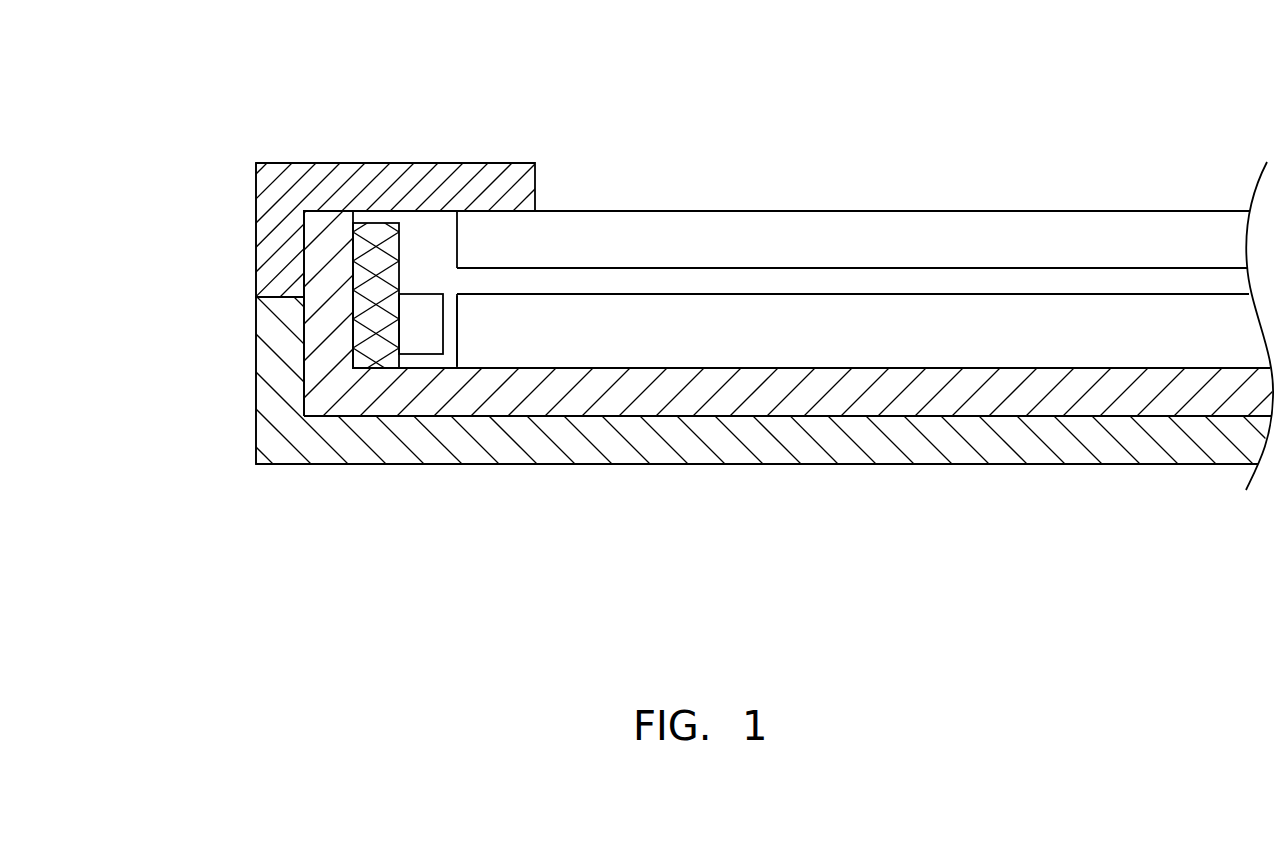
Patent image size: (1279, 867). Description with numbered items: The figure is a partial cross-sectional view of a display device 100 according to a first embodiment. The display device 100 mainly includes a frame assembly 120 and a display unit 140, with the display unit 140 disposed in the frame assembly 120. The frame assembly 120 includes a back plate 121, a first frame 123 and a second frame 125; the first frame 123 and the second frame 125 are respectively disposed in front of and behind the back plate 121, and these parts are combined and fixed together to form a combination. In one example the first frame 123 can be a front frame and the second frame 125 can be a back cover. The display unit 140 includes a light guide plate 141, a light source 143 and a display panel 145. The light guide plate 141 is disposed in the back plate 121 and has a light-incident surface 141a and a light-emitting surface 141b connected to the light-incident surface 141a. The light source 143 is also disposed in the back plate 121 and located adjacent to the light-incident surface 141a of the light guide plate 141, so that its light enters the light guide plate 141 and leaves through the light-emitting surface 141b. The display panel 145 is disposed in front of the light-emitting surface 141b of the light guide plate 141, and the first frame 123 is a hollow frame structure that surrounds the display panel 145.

The display device 100 is at (142, 76).
The frame assembly 120 is at (138, 215).
The back plate 121 is at (363, 402).
The first frame 123 is at (270, 229).
The second frame 125 is at (270, 367).
The display unit 140 is at (663, 583).
The light guide plate 141 is at (532, 348).
The light-incident surface 141a is at (457, 330).
The light-emitting surface 141b is at (823, 294).
The light source 143 is at (422, 335).
The display panel 145 is at (642, 249).